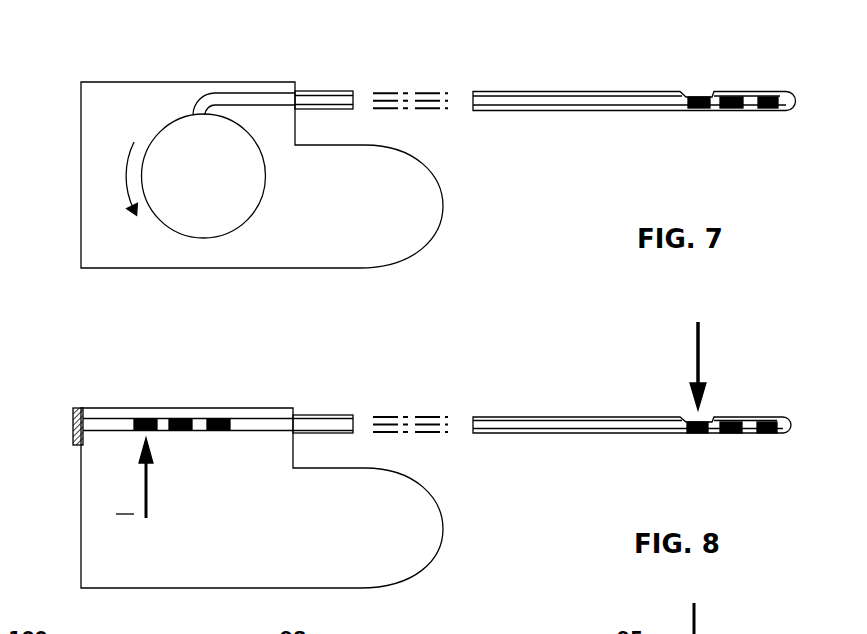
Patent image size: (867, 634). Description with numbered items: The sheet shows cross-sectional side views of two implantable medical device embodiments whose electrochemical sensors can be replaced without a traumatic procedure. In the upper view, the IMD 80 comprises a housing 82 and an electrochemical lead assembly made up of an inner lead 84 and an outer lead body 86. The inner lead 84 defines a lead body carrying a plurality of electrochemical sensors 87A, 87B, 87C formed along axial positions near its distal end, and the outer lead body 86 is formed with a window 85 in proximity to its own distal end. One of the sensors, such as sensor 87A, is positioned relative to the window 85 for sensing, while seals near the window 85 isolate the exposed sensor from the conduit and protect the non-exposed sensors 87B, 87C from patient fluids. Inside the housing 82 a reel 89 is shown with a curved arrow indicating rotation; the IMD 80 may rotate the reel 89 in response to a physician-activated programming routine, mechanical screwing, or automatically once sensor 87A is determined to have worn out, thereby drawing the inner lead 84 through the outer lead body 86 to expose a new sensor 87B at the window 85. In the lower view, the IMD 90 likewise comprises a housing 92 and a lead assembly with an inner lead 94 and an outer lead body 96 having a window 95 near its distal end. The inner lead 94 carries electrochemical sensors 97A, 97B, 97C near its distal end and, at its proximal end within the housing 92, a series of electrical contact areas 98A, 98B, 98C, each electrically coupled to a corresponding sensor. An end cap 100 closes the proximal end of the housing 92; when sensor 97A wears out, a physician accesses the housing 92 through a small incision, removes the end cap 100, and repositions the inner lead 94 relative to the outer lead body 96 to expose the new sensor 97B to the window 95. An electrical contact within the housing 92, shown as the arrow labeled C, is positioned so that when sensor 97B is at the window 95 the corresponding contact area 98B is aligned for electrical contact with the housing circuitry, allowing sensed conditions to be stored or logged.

In FIG. 7, the IMD 80 is at (235, 69).
In FIG. 7, the housing 82 is at (128, 95).
In FIG. 7, the inner lead 84 is at (345, 91).
In FIG. 7, the reel 89 is at (230, 222).
In FIG. 7, the outer lead body 86 is at (545, 91).
In FIG. 7, the window 85 is at (692, 84).
In FIG. 7, the electrochemical sensor 87A is at (700, 96).
In FIG. 7, the electrochemical sensor 87B is at (730, 111).
In FIG. 7, the electrochemical sensor 87C is at (770, 98).
In FIG. 8, the IMD 90 is at (283, 366).
In FIG. 8, the housing 92 is at (215, 575).
In FIG. 8, the inner lead 94 is at (340, 415).
In FIG. 8, the outer lead body 96 is at (518, 416).
In FIG. 8, the window 95 is at (686, 405).
In FIG. 8, the electrochemical sensor 97A is at (695, 433).
In FIG. 8, the electrochemical sensor 97B is at (728, 433).
In FIG. 8, the electrochemical sensor 97C is at (770, 420).
In FIG. 8, the electrical contact area 98A is at (148, 418).
In FIG. 8, the electrical contact area 98B is at (178, 431).
In FIG. 8, the electrical contact area 98C is at (225, 418).
In FIG. 8, the end cap 100 is at (73, 410).